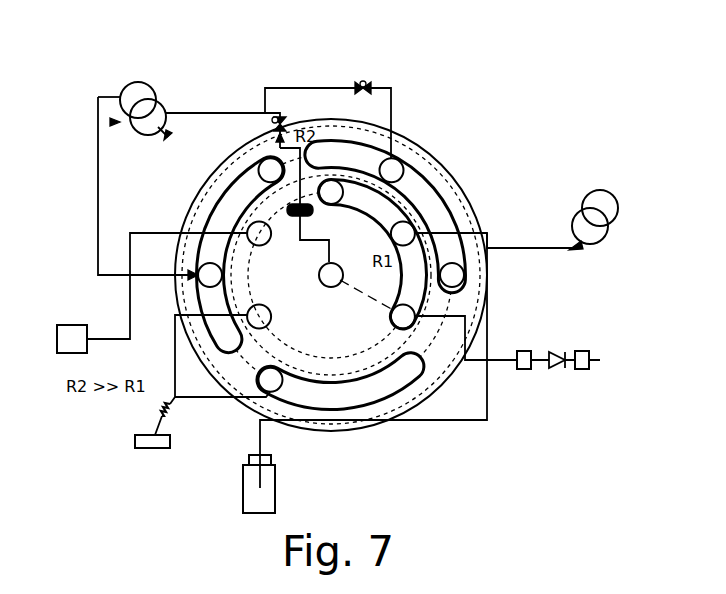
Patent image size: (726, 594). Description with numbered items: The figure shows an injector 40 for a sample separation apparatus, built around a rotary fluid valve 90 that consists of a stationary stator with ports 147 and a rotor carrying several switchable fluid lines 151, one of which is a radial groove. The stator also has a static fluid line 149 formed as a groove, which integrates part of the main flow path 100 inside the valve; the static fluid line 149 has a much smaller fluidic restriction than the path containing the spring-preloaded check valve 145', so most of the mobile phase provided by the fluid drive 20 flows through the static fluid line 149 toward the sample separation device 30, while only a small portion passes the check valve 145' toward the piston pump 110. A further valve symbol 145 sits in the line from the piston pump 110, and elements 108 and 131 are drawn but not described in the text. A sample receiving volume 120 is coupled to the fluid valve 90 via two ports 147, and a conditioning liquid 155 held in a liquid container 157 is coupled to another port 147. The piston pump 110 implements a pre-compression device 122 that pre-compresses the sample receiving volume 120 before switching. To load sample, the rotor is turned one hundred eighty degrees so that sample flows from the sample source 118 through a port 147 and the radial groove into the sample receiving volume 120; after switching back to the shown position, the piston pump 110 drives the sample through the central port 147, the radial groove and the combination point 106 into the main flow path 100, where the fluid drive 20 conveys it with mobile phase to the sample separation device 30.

The injector 40 is at (86, 70).
The piston pump 110 is at (136, 82).
The pre-compression device 122 is at (108, 122).
The sample source 118 is at (66, 325).
The ports 147 is at (215, 225).
The fluid lines 151 is at (213, 232).
The valve 145 is at (328, 102).
The check valve 145' is at (302, 117).
The sample receiving volume 120 is at (300, 218).
The central port 108 is at (360, 253).
The static fluid line 149 is at (417, 321).
The combination point 106 is at (427, 340).
The main flow path 100 is at (500, 353).
The sample separation device 30 is at (582, 351).
The fluid drive 20 is at (598, 190).
The rotary fluid valve 90 is at (245, 415).
The heater 131 is at (155, 450).
The conditioning liquid 155 is at (278, 490).
The liquid container 157 is at (272, 472).